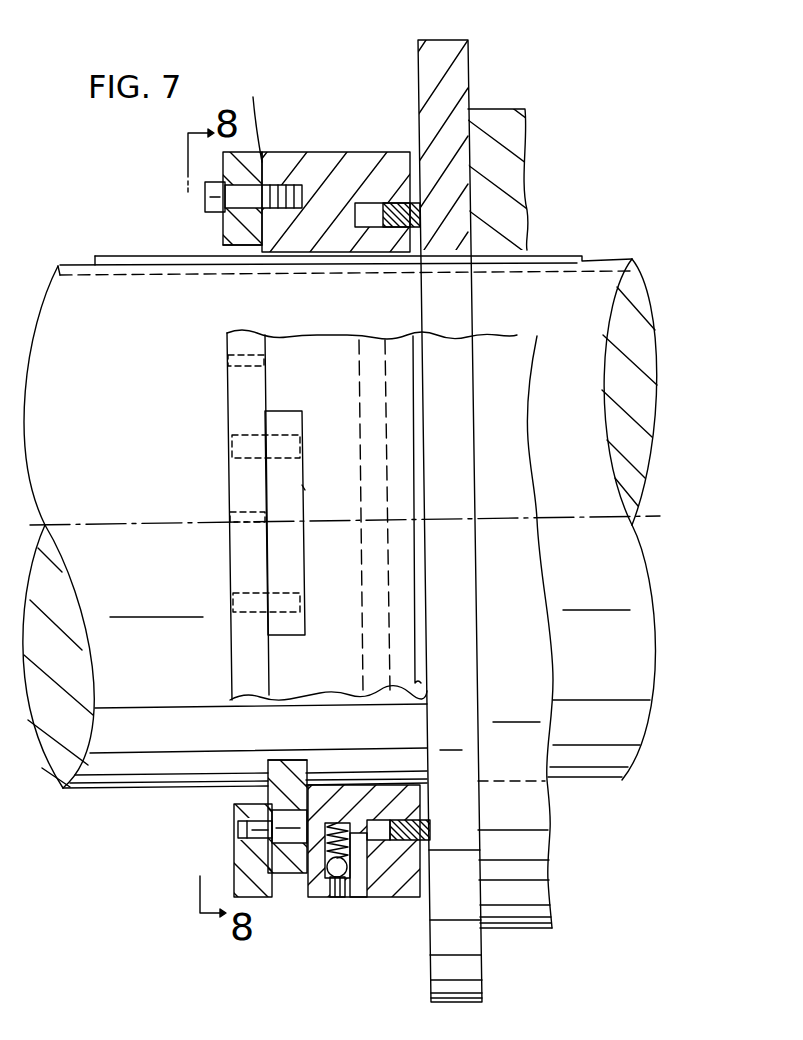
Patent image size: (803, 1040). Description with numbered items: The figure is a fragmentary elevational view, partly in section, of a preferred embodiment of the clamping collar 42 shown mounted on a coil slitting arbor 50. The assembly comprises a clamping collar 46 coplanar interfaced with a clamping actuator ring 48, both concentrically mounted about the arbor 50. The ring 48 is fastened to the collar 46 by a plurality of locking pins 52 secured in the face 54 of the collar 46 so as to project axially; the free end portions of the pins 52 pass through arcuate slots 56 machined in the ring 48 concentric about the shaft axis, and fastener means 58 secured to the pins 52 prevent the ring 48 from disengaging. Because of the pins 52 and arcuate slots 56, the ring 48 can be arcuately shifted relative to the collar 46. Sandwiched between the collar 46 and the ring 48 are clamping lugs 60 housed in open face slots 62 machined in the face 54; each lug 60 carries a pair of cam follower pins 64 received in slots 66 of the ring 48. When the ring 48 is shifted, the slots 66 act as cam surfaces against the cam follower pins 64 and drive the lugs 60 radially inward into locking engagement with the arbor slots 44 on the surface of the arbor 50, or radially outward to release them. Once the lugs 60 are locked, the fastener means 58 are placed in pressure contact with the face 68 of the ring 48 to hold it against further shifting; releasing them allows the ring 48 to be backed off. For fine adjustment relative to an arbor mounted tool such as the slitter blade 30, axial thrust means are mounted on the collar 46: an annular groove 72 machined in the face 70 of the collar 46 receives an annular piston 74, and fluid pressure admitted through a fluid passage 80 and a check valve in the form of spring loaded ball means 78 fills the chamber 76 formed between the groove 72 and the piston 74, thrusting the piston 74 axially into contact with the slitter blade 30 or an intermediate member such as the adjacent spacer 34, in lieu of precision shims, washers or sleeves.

The slitter blade 30 is at (472, 965).
The bearing block 34 is at (540, 870).
The clamping collar 42 is at (328, 158).
The arbor slots 44 is at (295, 763).
The clamping collar 46 is at (352, 158).
The clamping actuator ring 48 is at (235, 230).
The arbor 50 is at (645, 660).
The locking pins 52 is at (277, 186).
The face of collar 54 is at (229, 393).
The arcuate slots 56 is at (230, 205).
The fastener means 58 is at (215, 182).
The clamping lugs 60 is at (293, 548).
The open face slots 62 is at (300, 486).
The cam follower pins 64 is at (300, 447).
The slots of ring 66 is at (229, 362).
The face of ring 68 is at (228, 238).
The face of collar 70 is at (422, 868).
The annular groove 72 is at (378, 820).
The annular piston 74 is at (421, 828).
The chamber 76 is at (360, 878).
The spring loaded ball means 78 is at (344, 880).
The fluid passage 80 is at (342, 830).